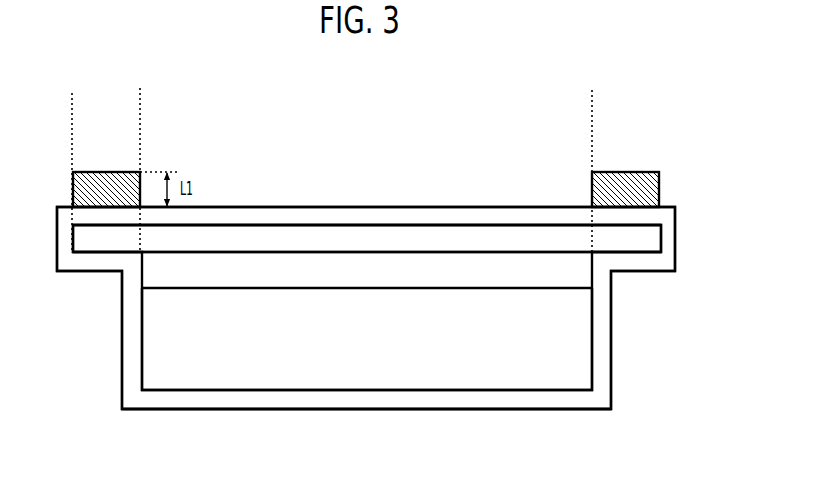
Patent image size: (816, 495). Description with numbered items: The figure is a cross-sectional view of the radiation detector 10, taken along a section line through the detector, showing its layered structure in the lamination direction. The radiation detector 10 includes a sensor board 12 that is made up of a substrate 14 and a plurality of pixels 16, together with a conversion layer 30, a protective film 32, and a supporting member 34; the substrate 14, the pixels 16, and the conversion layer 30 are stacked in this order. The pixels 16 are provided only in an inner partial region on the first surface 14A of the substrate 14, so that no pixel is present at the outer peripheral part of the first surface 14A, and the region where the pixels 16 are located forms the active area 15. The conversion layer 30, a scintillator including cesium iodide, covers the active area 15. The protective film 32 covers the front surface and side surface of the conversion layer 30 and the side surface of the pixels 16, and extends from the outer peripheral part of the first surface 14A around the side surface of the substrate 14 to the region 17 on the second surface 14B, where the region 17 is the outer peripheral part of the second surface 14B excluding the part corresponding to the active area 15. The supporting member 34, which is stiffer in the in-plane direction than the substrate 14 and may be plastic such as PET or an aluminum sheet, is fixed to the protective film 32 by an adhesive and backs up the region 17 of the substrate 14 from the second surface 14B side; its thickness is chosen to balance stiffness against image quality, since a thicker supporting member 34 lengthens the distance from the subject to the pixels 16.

The radiation detector 10 is at (715, 481).
The sensor board 12 is at (713, 221).
The substrate 14 is at (652, 232).
The first surface 14A is at (115, 256).
The second surface 14B is at (331, 222).
The active area 15 is at (591, 145).
The pixels 16 is at (582, 276).
The region 17 is at (139, 145).
The conversion layer 30 is at (582, 353).
The protective film 32 is at (357, 410).
The supporting member 34 is at (630, 185).